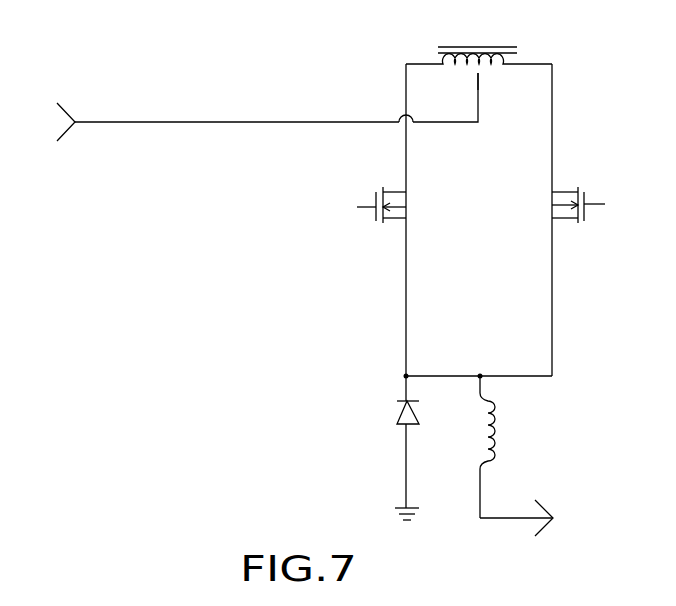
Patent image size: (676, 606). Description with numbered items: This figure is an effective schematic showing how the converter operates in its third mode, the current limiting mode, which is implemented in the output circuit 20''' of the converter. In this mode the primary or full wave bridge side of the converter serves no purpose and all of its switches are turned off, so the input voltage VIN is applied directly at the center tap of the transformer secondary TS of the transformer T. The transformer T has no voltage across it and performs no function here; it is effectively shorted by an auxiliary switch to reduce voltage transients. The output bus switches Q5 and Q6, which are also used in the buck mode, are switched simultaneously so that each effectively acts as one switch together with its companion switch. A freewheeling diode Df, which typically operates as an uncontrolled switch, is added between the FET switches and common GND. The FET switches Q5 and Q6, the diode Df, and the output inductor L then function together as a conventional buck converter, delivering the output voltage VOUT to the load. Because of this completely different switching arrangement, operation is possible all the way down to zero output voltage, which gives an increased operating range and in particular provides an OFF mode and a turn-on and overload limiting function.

The input voltage VIN is at (249, 107).
The transformer T is at (479, 45).
The transformer secondary TS is at (490, 86).
The switch Q5 is at (372, 195).
The switch Q6 is at (578, 190).
The output circuit 20''' is at (332, 346).
The freewheeling diode Df is at (391, 442).
The common GND is at (424, 518).
The inductor L is at (493, 447).
The output voltage VOUT is at (540, 518).